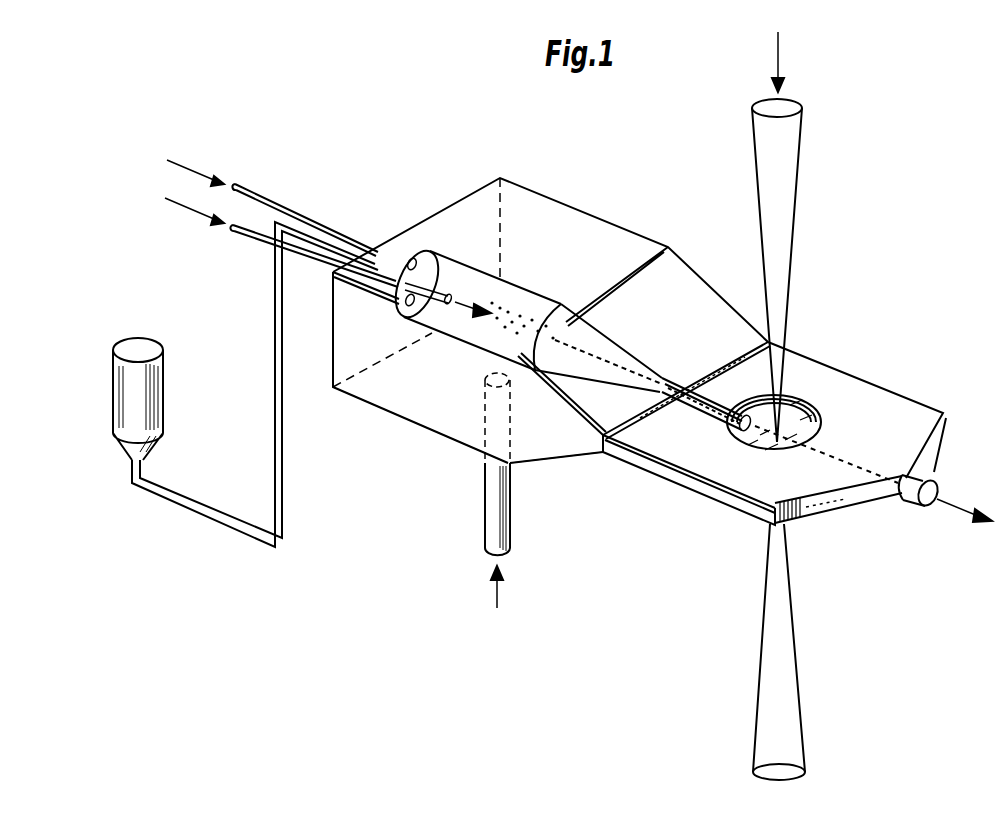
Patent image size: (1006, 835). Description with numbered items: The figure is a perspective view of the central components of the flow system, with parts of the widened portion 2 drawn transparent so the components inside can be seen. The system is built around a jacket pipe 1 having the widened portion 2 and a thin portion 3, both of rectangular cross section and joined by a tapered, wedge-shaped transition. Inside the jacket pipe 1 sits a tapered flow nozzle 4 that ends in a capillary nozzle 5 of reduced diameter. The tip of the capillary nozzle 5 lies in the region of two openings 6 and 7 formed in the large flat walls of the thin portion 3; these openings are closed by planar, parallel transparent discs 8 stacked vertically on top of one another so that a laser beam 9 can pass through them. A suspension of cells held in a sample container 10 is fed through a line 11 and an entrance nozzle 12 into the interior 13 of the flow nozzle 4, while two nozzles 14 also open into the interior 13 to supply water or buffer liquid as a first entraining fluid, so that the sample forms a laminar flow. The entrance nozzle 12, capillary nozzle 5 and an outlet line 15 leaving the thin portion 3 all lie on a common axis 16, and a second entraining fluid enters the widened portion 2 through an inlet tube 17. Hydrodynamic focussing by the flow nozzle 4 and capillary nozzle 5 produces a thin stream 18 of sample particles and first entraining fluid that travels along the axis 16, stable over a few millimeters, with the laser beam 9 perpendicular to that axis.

The jacket pipe 1 is at (577, 456).
The widened portion 2 is at (600, 229).
The thin portion 3 is at (713, 463).
The flow nozzle 4 is at (520, 302).
The capillary nozzle 5 is at (712, 388).
The opening 6 is at (791, 393).
The opening 7 is at (821, 416).
The transparent discs 8 is at (806, 403).
The laser beam 9 is at (793, 168).
The sample container 10 is at (164, 401).
The line 11 is at (275, 478).
The entrance nozzle 12 is at (427, 287).
The interior 13 is at (470, 279).
The nozzles 14 is at (410, 270).
The outlet line 15 is at (937, 484).
The common axis 16 is at (958, 519).
The inlet tube 17 is at (487, 498).
The thin stream 18 is at (770, 443).